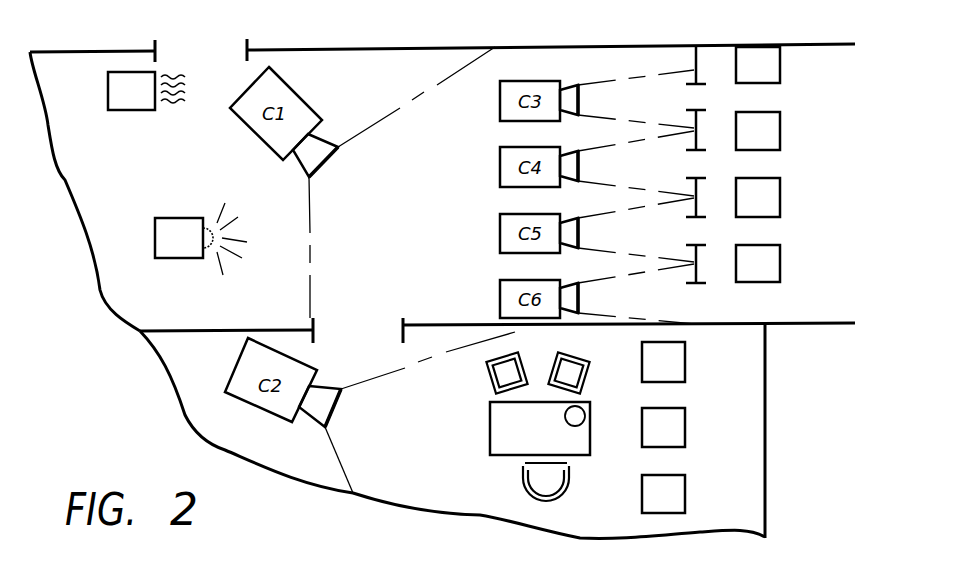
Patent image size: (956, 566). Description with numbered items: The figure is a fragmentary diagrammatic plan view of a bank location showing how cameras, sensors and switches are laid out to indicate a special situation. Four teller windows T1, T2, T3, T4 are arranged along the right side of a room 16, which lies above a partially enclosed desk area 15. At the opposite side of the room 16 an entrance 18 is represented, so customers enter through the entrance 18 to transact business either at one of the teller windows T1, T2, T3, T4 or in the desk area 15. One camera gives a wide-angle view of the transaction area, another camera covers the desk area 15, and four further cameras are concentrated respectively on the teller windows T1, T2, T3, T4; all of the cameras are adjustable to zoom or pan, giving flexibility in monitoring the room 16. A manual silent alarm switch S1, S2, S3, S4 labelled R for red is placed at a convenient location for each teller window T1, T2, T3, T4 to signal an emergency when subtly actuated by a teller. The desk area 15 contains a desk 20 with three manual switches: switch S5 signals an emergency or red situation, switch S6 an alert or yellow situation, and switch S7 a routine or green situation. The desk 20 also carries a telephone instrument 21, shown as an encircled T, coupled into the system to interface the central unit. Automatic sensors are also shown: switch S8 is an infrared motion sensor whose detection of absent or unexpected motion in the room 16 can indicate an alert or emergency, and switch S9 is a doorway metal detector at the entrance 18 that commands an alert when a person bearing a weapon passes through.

The desk area 15 is at (497, 430).
The room 16 is at (442, 187).
The entrance 18 is at (193, 57).
The desk 20 is at (497, 425).
The telephone instrument 21 is at (578, 426).
The manual silent alarm switch S1 is at (780, 83).
The manual silent alarm switch S2 is at (780, 150).
The manual silent alarm switch S3 is at (780, 217).
The manual silent alarm switch S4 is at (780, 282).
The manual switch S5 is at (685, 382).
The manual switch S6 is at (685, 447).
The manual switch S7 is at (685, 513).
The infrared sensor switch S8 is at (175, 218).
The doorway metal detector switch S9 is at (135, 110).
The teller window T1 is at (700, 97).
The teller window T2 is at (700, 162).
The teller window T3 is at (700, 229).
The teller window T4 is at (700, 296).